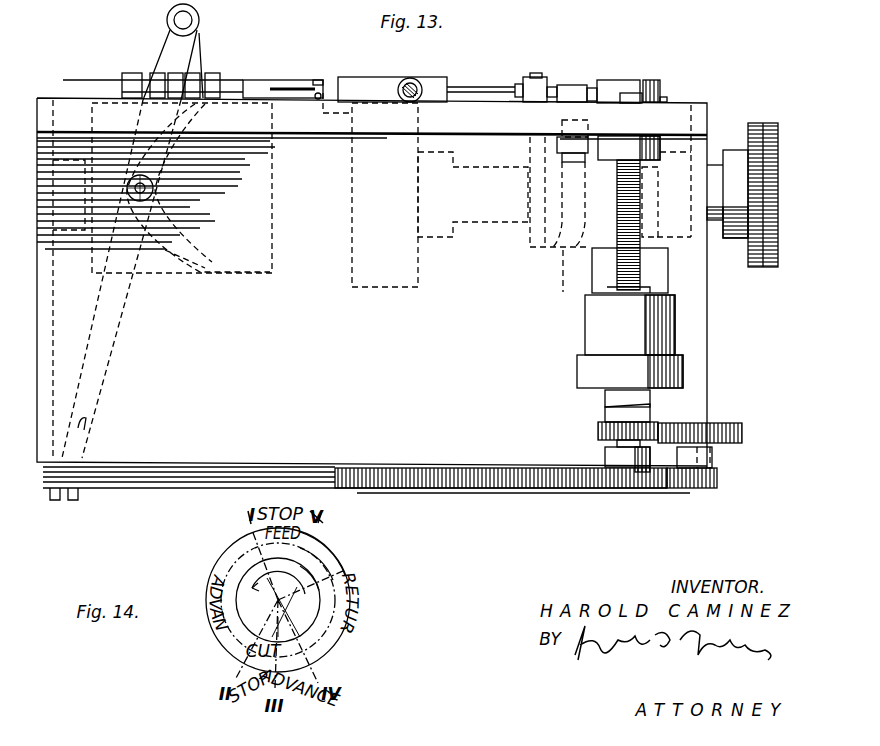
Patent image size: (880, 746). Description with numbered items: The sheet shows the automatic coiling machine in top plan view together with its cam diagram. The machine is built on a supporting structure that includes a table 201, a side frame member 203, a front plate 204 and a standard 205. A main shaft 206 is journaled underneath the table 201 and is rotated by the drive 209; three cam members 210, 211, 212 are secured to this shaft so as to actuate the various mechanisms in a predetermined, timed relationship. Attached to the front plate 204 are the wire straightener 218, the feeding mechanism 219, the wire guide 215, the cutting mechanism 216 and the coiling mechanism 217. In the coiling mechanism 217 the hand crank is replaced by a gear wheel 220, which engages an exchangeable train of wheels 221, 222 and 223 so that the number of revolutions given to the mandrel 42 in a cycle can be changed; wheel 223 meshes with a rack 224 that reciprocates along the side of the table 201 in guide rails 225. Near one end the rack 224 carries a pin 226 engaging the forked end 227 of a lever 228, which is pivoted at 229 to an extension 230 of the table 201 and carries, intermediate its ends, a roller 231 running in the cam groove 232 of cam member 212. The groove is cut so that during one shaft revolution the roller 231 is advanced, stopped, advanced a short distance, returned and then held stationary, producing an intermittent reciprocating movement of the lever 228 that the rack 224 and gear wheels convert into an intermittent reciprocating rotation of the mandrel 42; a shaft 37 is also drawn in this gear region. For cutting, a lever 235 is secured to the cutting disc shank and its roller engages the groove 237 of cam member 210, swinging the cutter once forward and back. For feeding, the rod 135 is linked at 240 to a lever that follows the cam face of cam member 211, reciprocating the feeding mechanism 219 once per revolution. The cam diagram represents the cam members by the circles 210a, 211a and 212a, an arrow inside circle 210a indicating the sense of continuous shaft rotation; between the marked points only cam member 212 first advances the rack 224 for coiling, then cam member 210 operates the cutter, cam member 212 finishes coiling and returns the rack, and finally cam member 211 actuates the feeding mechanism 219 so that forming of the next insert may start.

In FIG. 13, the table 201 is at (372, 283).
In FIG. 13, the side frame member 203 is at (52, 328).
In FIG. 13, the cam member 212 is at (131, 282).
In FIG. 13, the cam groove 232 is at (203, 276).
In FIG. 13, the roller 231 is at (157, 207).
In FIG. 13, the lever 228 is at (112, 337).
In FIG. 13, the pivot 229 is at (167, 21).
In FIG. 13, the extension 230 is at (196, 53).
In FIG. 13, the wire straightener 218 is at (223, 72).
In FIG. 13, the link 240 is at (249, 85).
In FIG. 13, the rod 135 is at (298, 83).
In FIG. 13, the feeding mechanism 219 is at (388, 80).
In FIG. 13, the wire guide 215 is at (524, 76).
In FIG. 13, the cutting mechanism 216 is at (567, 84).
In FIG. 13, the coiling mechanism 217 is at (657, 80).
In FIG. 13, the front plate 204 is at (693, 110).
In FIG. 13, the drive 209 is at (756, 268).
In FIG. 13, the lever 235 is at (548, 138).
In FIG. 13, the mandrel 42 is at (642, 221).
In FIG. 13, the main shaft 206 is at (486, 214).
In FIG. 13, the cam member 211 is at (387, 278).
In FIG. 13, the cam member 210 is at (547, 252).
In FIG. 13, the cam groove 237 is at (565, 262).
In FIG. 13, the standard 205 is at (598, 318).
In FIG. 13, the gear wheel 220 is at (598, 433).
In FIG. 13, the shaft 37 is at (616, 450).
In FIG. 13, the gear wheel 221 is at (748, 432).
In FIG. 13, the gear wheel 222 is at (720, 480).
In FIG. 13, the gear wheel 223 is at (641, 497).
In FIG. 13, the rack 224 is at (526, 492).
In FIG. 13, the guide rails 225 is at (591, 500).
In FIG. 13, the pin 226 is at (80, 494).
In FIG. 13, the forked end 227 is at (60, 502).
In FIG. 14, the circle 212a is at (344, 540).
In FIG. 14, the circle 211a is at (354, 555).
In FIG. 14, the circle 210a is at (352, 570).